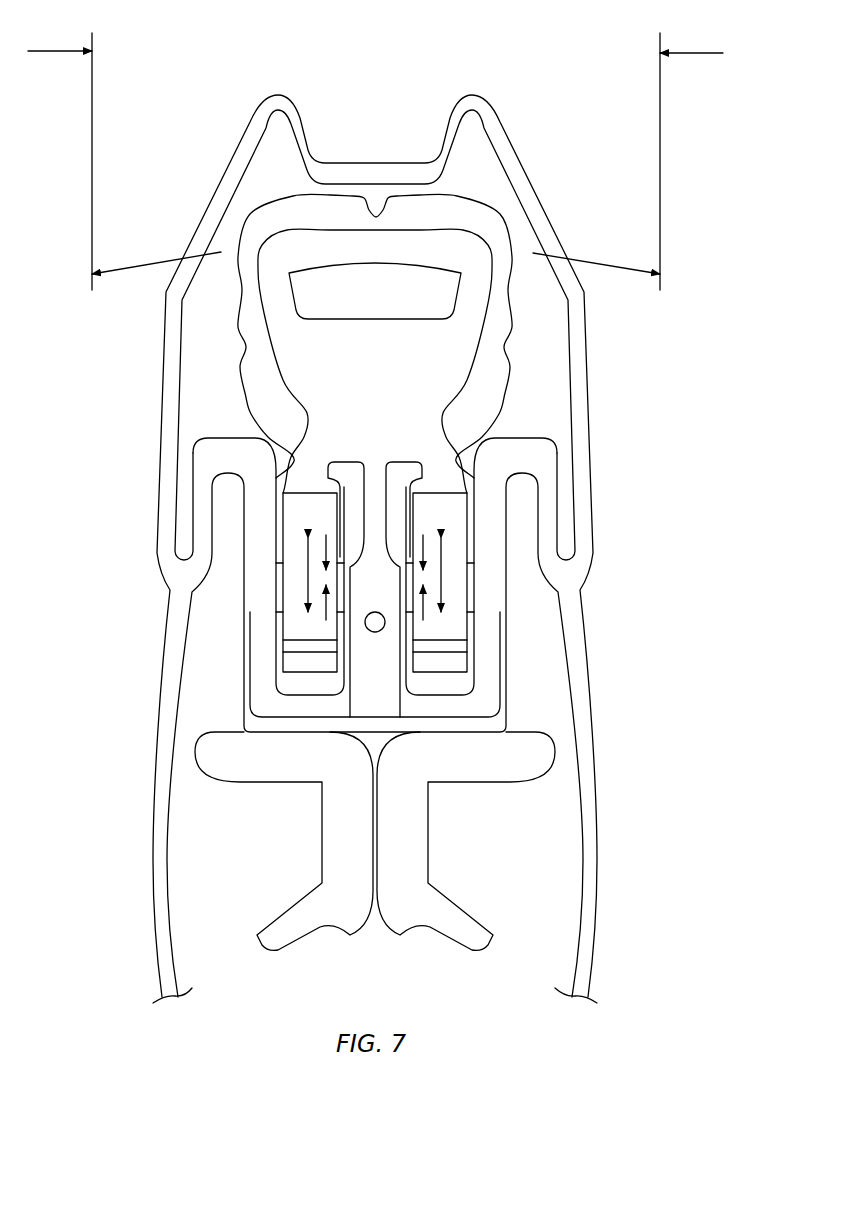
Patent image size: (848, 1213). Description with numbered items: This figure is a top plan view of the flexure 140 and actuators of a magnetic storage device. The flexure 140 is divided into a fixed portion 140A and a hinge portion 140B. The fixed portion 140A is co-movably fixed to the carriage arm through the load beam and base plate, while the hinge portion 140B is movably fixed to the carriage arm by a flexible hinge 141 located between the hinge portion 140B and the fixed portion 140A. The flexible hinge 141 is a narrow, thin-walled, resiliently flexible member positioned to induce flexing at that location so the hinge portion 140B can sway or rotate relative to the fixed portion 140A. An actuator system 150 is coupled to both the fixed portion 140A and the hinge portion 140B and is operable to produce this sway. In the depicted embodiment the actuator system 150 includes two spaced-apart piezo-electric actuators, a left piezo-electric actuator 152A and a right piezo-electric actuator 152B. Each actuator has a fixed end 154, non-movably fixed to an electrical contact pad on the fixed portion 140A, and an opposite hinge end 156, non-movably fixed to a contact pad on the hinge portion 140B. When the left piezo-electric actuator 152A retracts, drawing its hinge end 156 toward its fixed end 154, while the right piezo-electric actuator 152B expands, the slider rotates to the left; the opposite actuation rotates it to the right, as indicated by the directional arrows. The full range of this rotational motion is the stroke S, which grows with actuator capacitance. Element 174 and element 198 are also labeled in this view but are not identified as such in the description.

The stroke S is at (698, 52).
The flexure 140 is at (597, 565).
The fixed portion 140A is at (372, 577).
The hinge portion 140B is at (432, 362).
The flexible hinge 141 is at (380, 505).
The actuator system 150 is at (277, 625).
The left piezo-electric actuator 152A is at (300, 508).
The right piezo-electric actuator 152B is at (453, 558).
The fixed end 154 is at (302, 662).
The hinge end 156 is at (317, 505).
The resilient member 174 is at (297, 583).
The elastomeric seal 198 is at (455, 218).